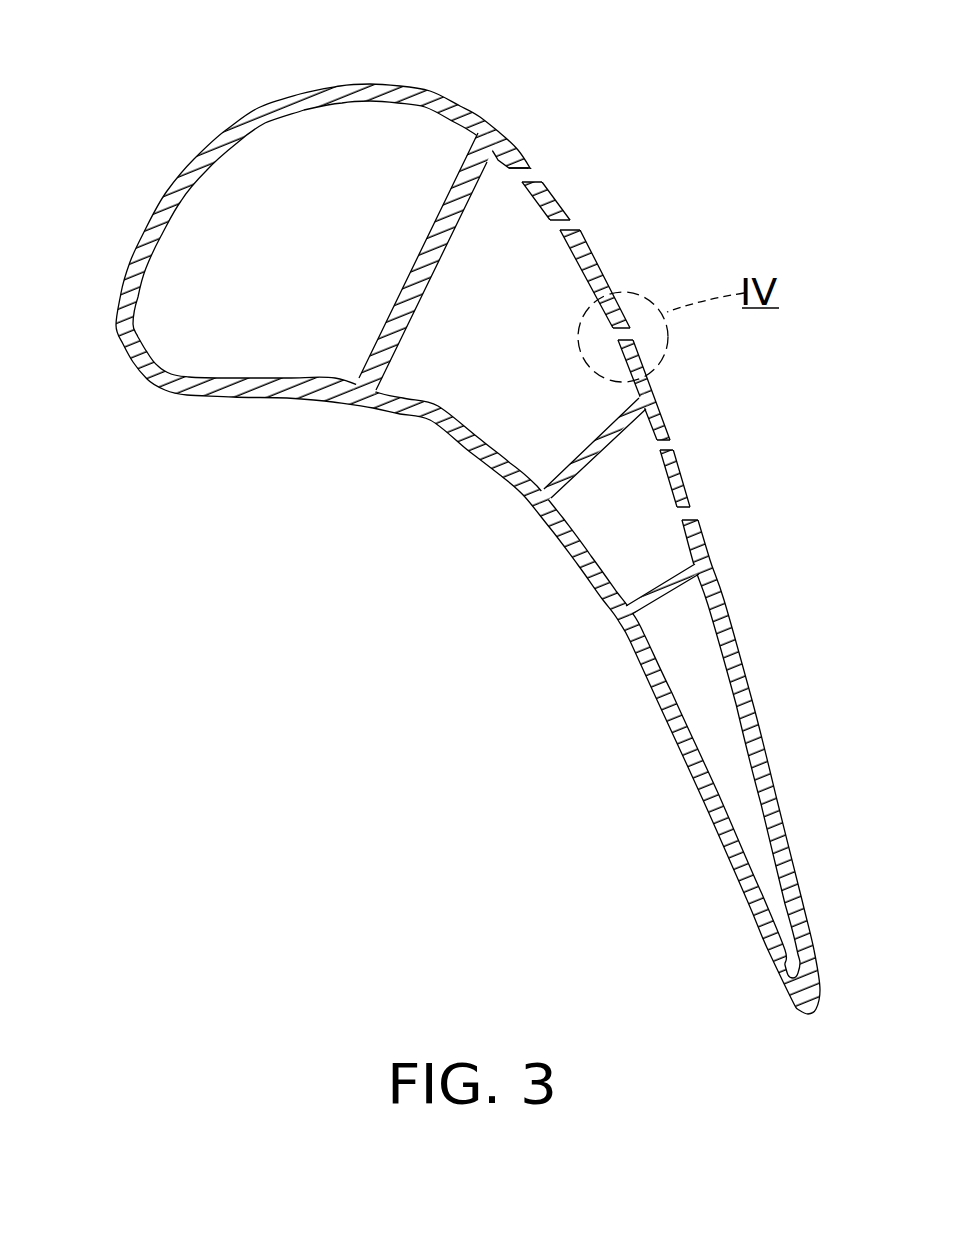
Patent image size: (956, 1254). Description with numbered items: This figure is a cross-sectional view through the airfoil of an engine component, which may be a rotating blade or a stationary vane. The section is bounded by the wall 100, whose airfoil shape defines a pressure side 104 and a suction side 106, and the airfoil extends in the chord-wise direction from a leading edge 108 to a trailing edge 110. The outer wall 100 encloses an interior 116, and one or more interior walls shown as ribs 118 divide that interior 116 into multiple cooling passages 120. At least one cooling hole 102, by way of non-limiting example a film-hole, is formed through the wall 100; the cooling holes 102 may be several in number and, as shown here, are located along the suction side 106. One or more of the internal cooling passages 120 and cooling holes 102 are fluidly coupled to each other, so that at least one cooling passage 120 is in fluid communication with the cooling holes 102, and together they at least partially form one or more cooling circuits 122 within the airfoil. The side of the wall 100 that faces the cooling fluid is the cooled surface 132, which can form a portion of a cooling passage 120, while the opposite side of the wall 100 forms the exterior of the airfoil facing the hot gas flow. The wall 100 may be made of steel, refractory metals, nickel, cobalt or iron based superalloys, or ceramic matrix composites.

The wall 100 is at (520, 137).
The cooling hole 102 is at (575, 227).
The pressure side 104 is at (527, 503).
The suction side 106 is at (605, 275).
The leading edge 108 is at (140, 375).
The trailing edge 110 is at (808, 1013).
The interior 116 is at (362, 152).
The rib 118 is at (438, 265).
The cooling passage 120 is at (284, 258).
The cooling circuit 122 is at (417, 408).
The cooled surface 132 is at (597, 447).